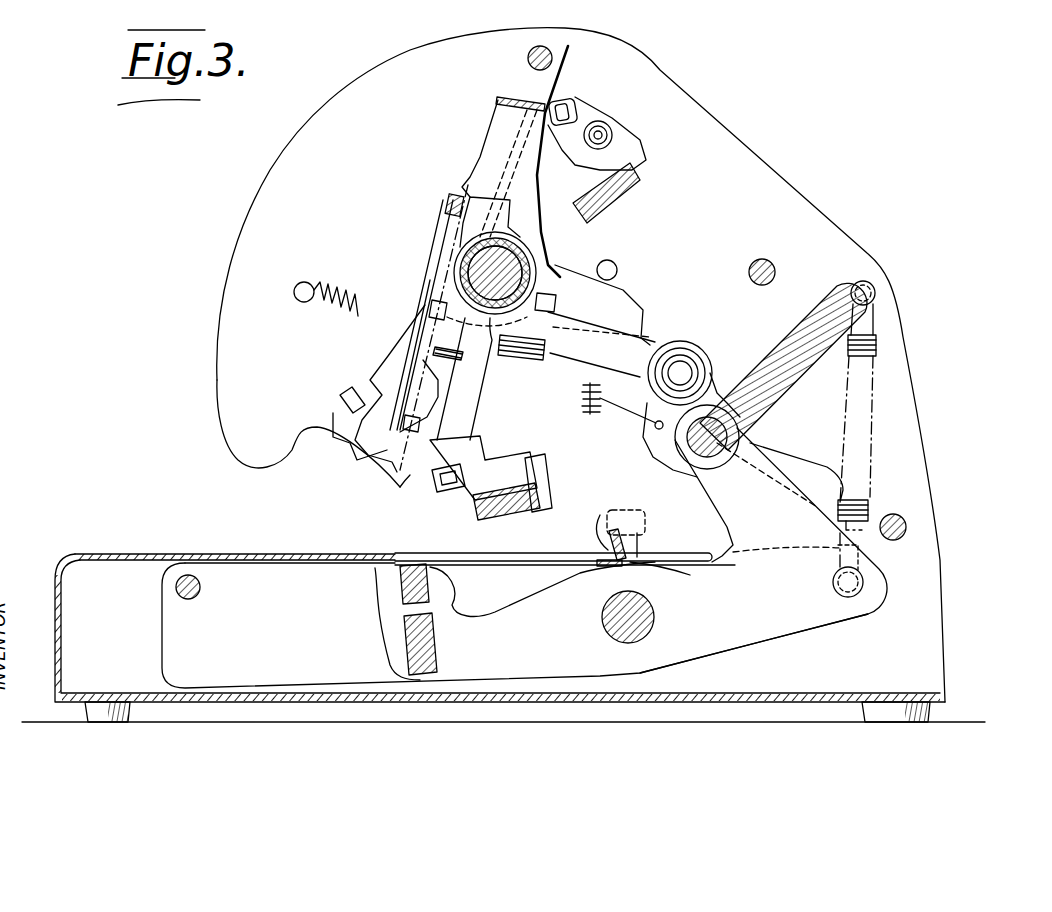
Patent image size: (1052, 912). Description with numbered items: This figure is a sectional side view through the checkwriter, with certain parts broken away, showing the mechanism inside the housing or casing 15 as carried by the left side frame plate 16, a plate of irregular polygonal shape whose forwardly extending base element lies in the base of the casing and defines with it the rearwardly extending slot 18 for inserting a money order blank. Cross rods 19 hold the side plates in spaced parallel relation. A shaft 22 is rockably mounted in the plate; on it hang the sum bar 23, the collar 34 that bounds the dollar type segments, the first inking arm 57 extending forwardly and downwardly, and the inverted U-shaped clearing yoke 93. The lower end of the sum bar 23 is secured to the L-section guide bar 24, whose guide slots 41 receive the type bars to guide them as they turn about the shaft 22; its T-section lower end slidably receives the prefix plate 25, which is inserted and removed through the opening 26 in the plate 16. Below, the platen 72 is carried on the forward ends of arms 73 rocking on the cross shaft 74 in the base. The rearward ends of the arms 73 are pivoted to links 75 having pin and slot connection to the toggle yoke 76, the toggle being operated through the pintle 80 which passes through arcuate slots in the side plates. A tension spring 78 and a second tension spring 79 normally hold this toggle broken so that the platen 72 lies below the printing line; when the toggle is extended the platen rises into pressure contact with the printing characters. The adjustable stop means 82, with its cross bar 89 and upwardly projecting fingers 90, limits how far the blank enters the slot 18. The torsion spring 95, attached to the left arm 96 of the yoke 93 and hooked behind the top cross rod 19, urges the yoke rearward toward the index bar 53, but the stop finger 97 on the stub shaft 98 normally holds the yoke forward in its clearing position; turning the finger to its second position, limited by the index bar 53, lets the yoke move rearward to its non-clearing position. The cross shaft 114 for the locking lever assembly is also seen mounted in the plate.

The housing or casing 15 is at (100, 556).
The side frame plate 16 is at (275, 189).
The slot 18 is at (580, 540).
The cross rods 19 is at (527, 58).
The shaft 22 is at (463, 258).
The sum bar 23 is at (472, 412).
The guide bar 24 is at (537, 507).
The prefix plate 25 is at (448, 492).
The opening 26 is at (410, 490).
The collar 34 is at (530, 243).
The guide slots 41 is at (540, 502).
The index bar 53 is at (635, 190).
The first inking arm 57 is at (388, 357).
The platen 72 is at (398, 588).
The arms 73 is at (530, 605).
The cross shaft 74 is at (652, 620).
The links 75 is at (768, 533).
The toggle yoke 76 is at (793, 373).
The tension spring 78 is at (587, 412).
The second tension spring 79 is at (870, 498).
The pintle 80 is at (698, 443).
The adjustable stop means 82 is at (606, 548).
The cross bar 89 is at (600, 570).
The fingers 90 is at (640, 565).
The clearing yoke 93 is at (500, 103).
The torsion spring 95 is at (505, 157).
The left arm 96 is at (498, 128).
The stop finger 97 is at (565, 108).
The stub shaft 98 is at (608, 130).
The cross shaft 114 is at (758, 260).